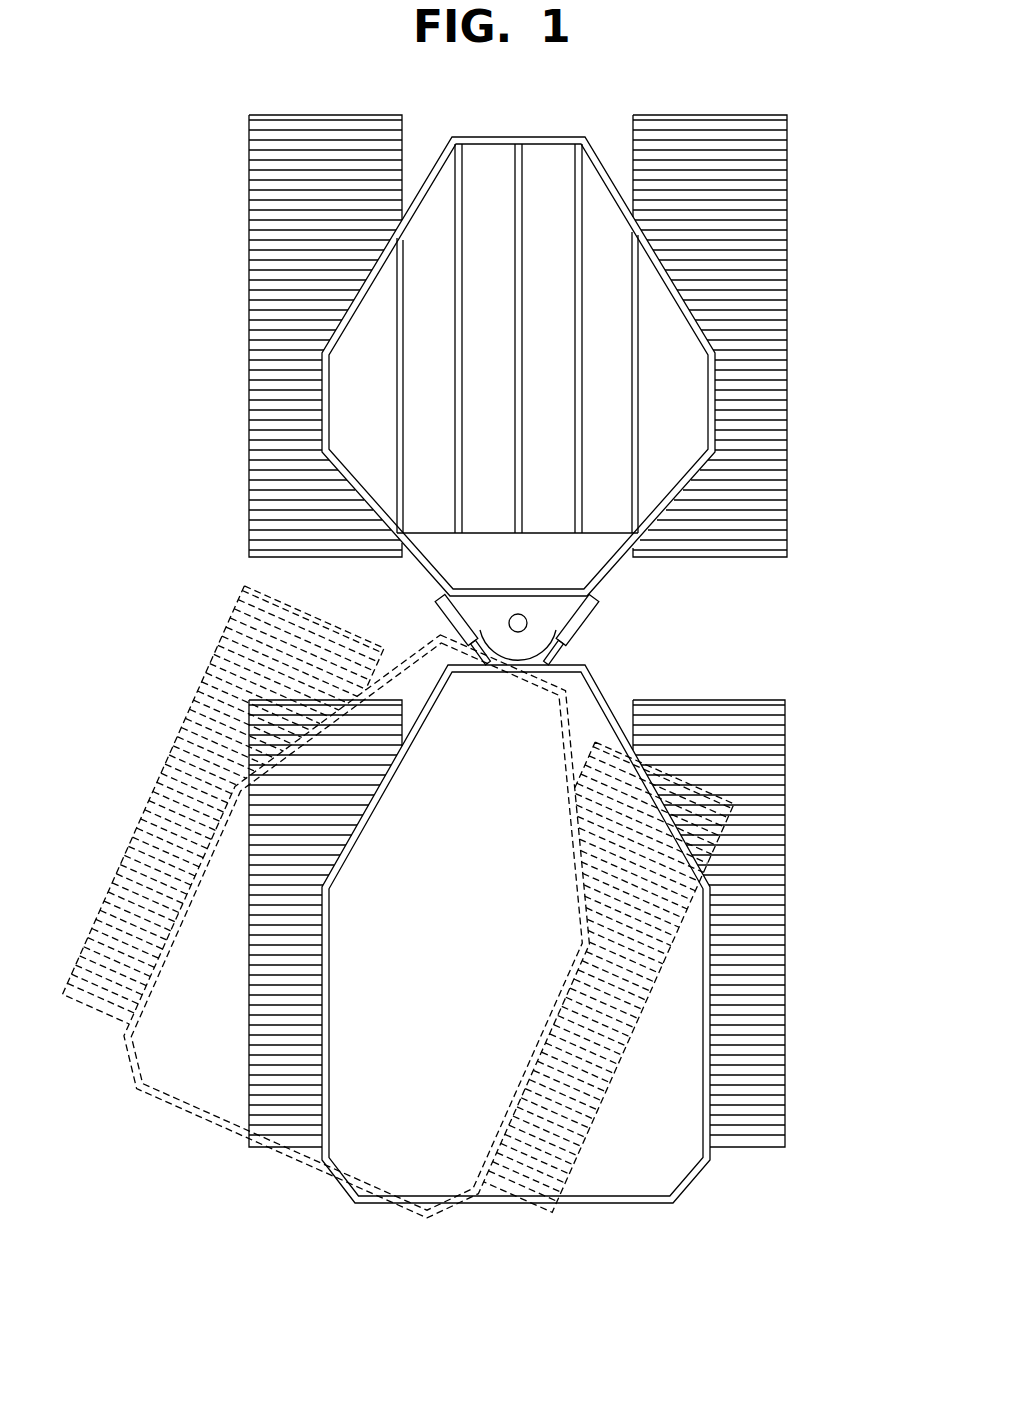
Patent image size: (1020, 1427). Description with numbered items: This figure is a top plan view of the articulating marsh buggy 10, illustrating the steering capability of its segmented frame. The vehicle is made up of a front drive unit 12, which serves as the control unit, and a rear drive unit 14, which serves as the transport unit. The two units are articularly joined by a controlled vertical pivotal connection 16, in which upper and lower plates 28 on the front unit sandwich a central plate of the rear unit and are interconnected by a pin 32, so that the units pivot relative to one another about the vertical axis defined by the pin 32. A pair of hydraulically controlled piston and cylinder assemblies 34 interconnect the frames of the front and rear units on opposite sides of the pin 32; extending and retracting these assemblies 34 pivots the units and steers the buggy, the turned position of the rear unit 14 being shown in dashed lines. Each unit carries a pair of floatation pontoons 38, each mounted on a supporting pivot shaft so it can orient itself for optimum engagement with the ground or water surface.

The articulating marsh buggy 10 is at (226, 580).
The front drive unit 12 is at (262, 287).
The rear drive unit 14 is at (104, 877).
The controlled vertical pivotal connection 16 is at (604, 610).
The upper and lower plates 28 is at (540, 622).
The pin 32 is at (514, 614).
The piston and cylinder assemblies 34 is at (447, 612).
The floatation pontoons 38 is at (707, 137).